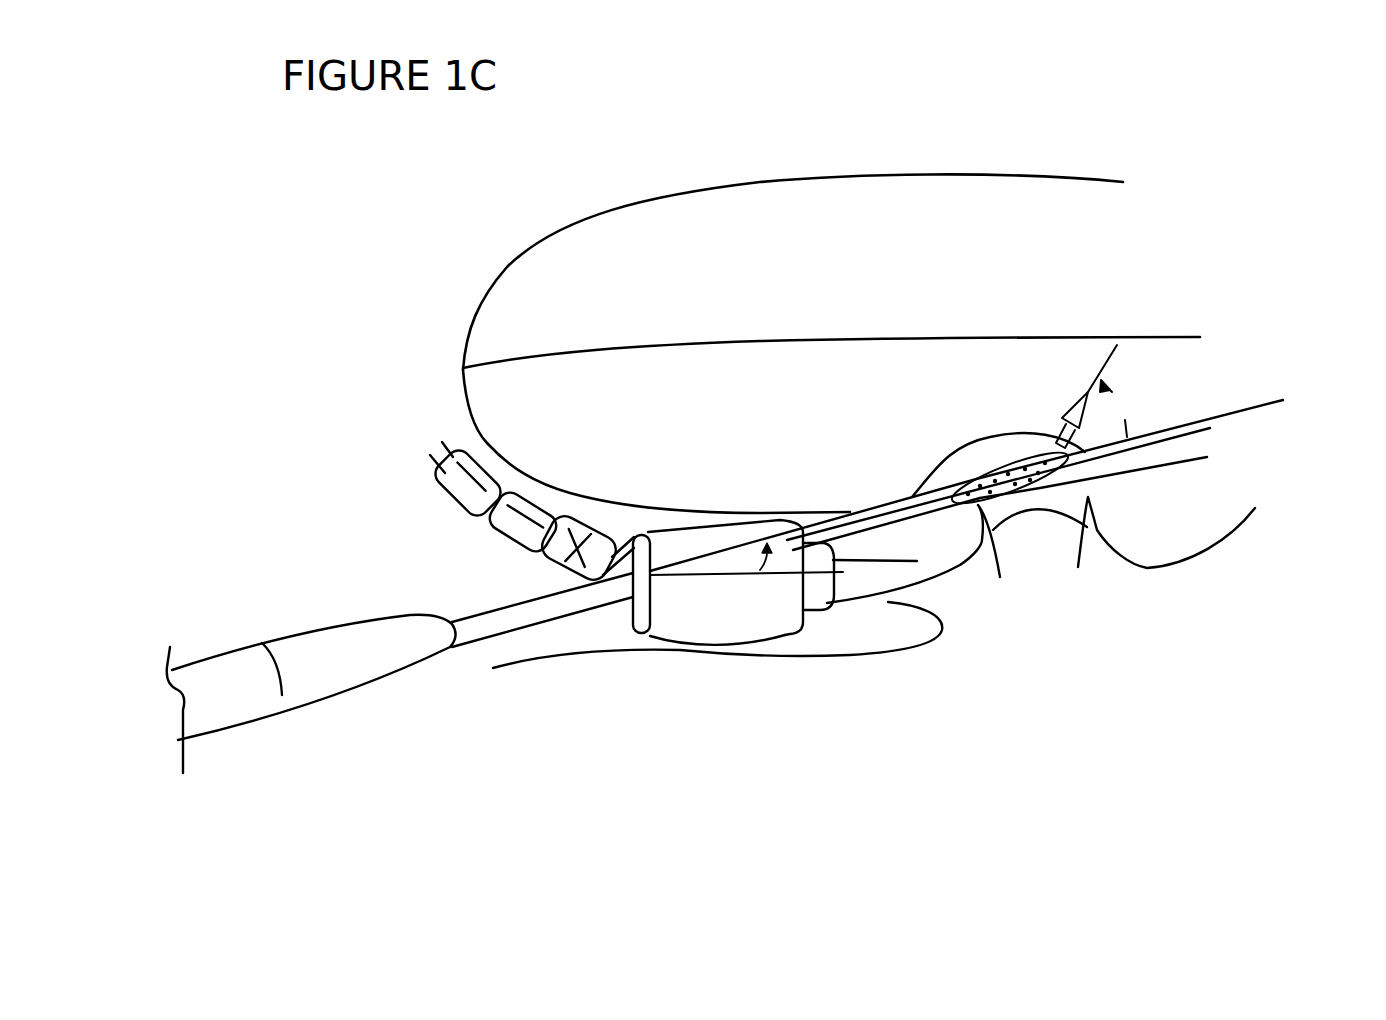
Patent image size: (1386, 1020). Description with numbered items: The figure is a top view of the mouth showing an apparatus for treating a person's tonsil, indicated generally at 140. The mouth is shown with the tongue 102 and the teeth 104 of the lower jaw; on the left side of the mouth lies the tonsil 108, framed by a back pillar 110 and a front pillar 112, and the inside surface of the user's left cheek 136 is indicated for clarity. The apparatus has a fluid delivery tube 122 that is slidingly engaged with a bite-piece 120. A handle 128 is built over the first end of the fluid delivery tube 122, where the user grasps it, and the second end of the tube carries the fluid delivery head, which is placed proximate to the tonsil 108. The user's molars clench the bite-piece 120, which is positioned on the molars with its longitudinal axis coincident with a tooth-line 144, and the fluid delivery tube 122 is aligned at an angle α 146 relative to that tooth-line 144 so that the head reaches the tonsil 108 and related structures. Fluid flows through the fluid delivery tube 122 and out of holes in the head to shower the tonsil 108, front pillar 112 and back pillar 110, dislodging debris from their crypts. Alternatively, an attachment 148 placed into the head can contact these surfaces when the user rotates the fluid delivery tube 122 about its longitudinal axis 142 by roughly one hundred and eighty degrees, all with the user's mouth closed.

The tongue 102 is at (536, 328).
The teeth 104 is at (492, 535).
The tonsil 108 is at (1043, 545).
The back pillar 110 is at (1092, 528).
The front pillar 112 is at (980, 537).
The bite-piece 120 is at (713, 617).
The fluid delivery tube 122 is at (547, 602).
The handle 128 is at (322, 677).
The left cheek 136 is at (633, 657).
The fluid showering arrangement 140 is at (1180, 153).
The longitudinal axis 142 is at (1233, 413).
The tooth-line 144 is at (783, 520).
The angle α 146 is at (783, 520).
The attachment 148 is at (1072, 403).